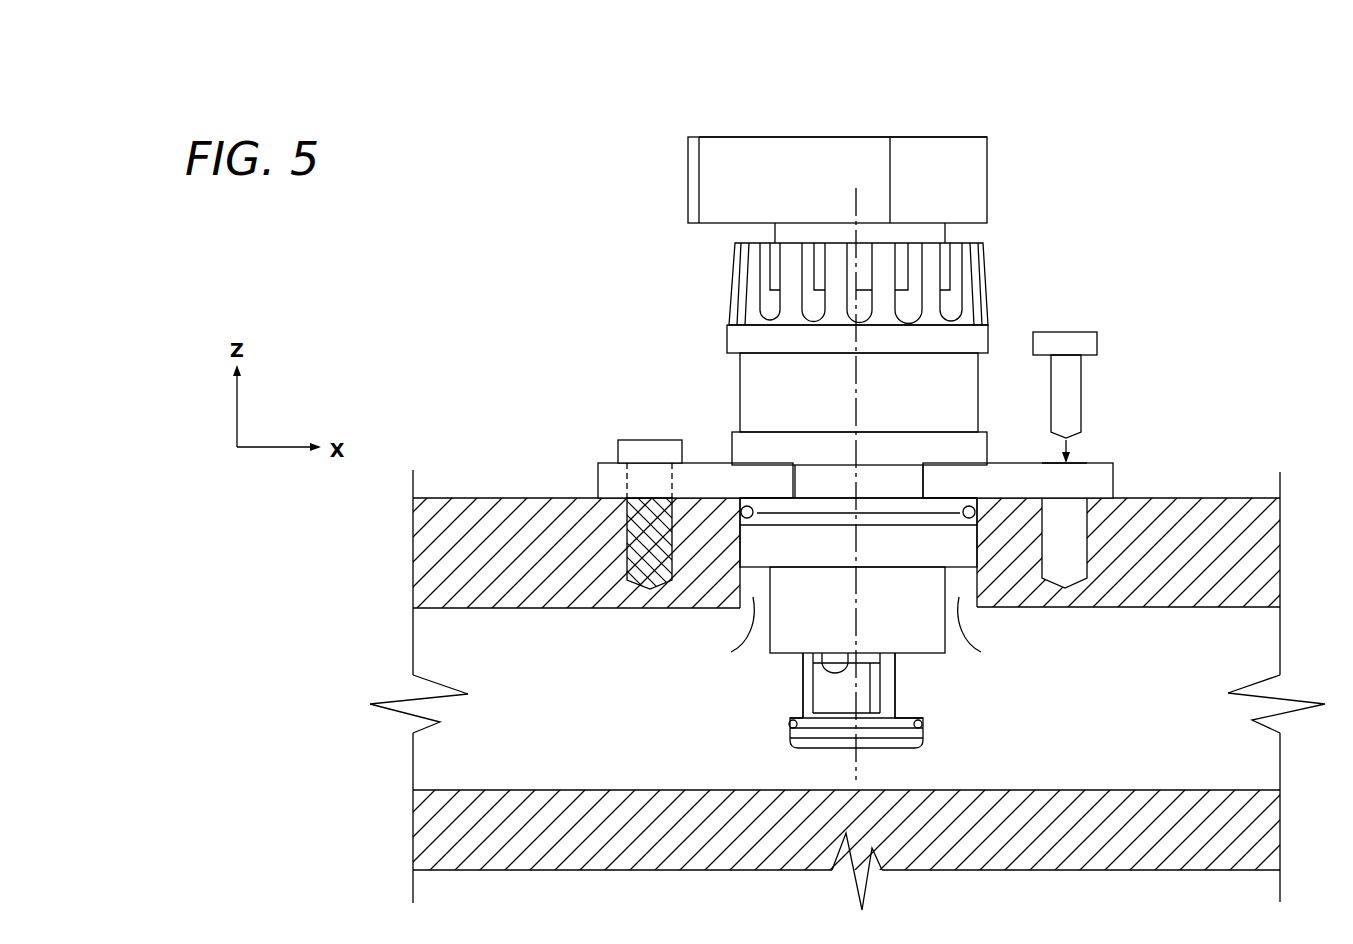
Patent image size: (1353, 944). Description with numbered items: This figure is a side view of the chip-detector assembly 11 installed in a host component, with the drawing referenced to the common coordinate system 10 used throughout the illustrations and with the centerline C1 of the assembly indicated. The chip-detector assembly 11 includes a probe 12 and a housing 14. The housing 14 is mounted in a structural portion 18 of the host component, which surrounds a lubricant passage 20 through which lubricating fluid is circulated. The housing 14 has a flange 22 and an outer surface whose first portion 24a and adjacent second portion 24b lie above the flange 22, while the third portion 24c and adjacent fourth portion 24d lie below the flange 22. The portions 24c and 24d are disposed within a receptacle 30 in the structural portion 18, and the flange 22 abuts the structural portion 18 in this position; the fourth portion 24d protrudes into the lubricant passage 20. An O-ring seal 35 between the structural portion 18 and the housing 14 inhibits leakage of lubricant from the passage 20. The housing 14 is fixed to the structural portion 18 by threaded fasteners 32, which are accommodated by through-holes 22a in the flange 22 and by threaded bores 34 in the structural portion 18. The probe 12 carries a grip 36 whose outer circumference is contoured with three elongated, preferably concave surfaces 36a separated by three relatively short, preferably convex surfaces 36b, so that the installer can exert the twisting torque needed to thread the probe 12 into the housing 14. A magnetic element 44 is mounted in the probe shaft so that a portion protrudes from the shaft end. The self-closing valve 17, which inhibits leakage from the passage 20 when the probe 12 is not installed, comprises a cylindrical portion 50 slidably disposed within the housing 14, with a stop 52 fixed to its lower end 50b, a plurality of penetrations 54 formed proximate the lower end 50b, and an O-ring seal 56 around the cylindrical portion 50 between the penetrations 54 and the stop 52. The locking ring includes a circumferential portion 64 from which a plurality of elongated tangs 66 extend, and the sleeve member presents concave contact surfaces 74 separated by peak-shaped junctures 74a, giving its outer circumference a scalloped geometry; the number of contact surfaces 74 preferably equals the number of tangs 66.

The coordinate system 10 is at (278, 450).
The chip-detector assembly 11 is at (1004, 86).
The probe 12 is at (800, 92).
The housing 14 is at (705, 382).
The self-closing valve 17 is at (814, 760).
The structural portion 18 is at (517, 503).
The lubricant passage 20 is at (521, 711).
The flange 22 is at (596, 482).
The through-holes 22a is at (1077, 466).
The first portion of outer surface 24a is at (812, 310).
The second portion of outer surface 24b is at (900, 408).
The third portion of outer surface 24c is at (905, 556).
The fourth portion of outer surface 24d is at (895, 631).
The receptacle 30 is at (745, 638).
The threaded fasteners 32 is at (648, 440).
The threaded bores 34 is at (1051, 556).
The O-ring seal 35 is at (742, 507).
The grip 36 is at (714, 130).
The elongated surfaces 36a is at (775, 179).
The short surfaces 36b is at (912, 179).
The magnetic element 44 is at (825, 660).
The cylindrical portion 50 is at (781, 670).
The lower end 50b is at (798, 720).
The stop 52 is at (795, 744).
The penetrations 54 is at (823, 685).
The O-ring seal 56 is at (920, 727).
The circumferential portion 64 is at (975, 337).
The tangs 66 is at (753, 240).
The contact surfaces 74 is at (853, 253).
The peak-shaped junctures 74a is at (903, 243).
The center axis C1 is at (855, 755).